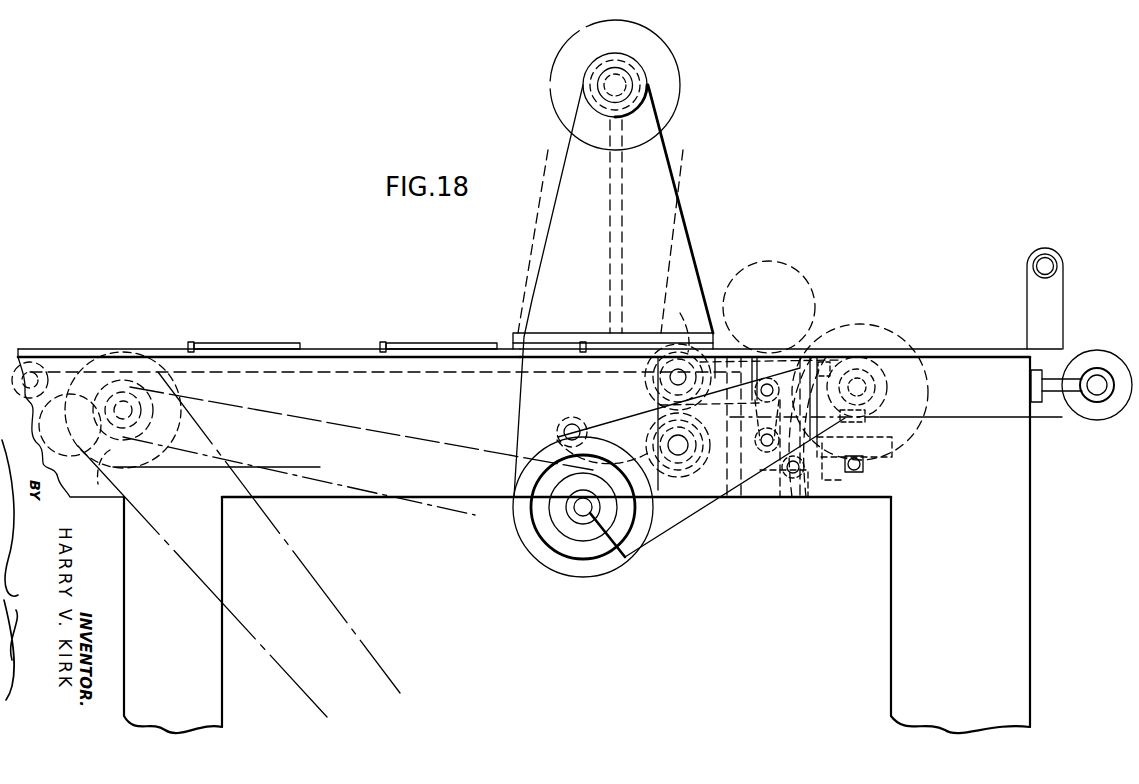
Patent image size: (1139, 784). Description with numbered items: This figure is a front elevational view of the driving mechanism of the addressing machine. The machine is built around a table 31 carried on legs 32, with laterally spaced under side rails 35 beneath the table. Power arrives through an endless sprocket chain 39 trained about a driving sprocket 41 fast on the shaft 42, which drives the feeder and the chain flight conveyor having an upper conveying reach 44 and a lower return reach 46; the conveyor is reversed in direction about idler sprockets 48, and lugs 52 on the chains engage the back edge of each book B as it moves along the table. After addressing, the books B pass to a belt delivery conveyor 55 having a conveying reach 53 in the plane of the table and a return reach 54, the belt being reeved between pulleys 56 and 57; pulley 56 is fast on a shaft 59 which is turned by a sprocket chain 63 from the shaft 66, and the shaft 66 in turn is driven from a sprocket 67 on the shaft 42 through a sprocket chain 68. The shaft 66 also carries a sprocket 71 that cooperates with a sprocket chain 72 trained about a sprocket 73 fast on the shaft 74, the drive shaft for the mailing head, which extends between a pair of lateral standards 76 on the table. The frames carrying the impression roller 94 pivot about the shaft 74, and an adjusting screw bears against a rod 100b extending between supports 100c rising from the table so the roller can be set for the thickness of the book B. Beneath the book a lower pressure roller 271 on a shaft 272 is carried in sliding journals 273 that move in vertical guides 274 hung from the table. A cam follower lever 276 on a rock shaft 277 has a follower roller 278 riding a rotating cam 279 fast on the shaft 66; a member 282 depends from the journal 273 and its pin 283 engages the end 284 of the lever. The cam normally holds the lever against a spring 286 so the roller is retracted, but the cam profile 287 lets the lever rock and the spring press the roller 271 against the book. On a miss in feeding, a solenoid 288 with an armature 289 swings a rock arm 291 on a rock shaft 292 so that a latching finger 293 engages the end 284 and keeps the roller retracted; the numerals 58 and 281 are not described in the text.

The table 31 is at (78, 355).
The legs 32 is at (212, 684).
The under side rails 35 is at (313, 490).
The endless sprocket chain 39 is at (318, 572).
The driving sprocket 41 is at (133, 462).
The shaft 42 is at (186, 391).
The upper conveying reach 44 is at (221, 357).
The lower return reach 46 is at (272, 466).
The idler sprockets 48 is at (682, 323).
The lugs 52 is at (191, 343).
The conveying reach 53 is at (948, 348).
The return reach 54 is at (998, 418).
The belt delivery conveyor 55 is at (999, 338).
The pulley 56 is at (870, 347).
The pulley 57 is at (1113, 362).
The post 58 is at (920, 355).
The shaft 59 is at (885, 350).
The sprocket chain 63 is at (698, 540).
The shaft 66 is at (626, 565).
The sprocket 67 is at (186, 437).
The sprocket chain 68 is at (470, 518).
The sprocket 71 is at (548, 590).
The sprocket chain 72 is at (679, 166).
The sprocket 73 is at (548, 80).
The shaft 74 is at (647, 86).
The lateral standards 76 is at (695, 254).
The impression roller 94 is at (795, 263).
The rod 100b is at (1047, 258).
The supports 100c is at (1032, 268).
The lower pressure roller 271 is at (805, 352).
The shaft 272 is at (803, 348).
The sliding journals 273 is at (648, 404).
The vertical guides 274 is at (758, 345).
The cam follower lever 276 is at (607, 420).
The rock shaft 277 is at (672, 466).
The follower roller 278 is at (540, 424).
The rotating cam 279 is at (528, 546).
The rod 281 is at (779, 500).
The member 282 is at (890, 378).
The pin 283 is at (762, 500).
The end of cam lever 284 is at (885, 408).
The spring 286 is at (805, 500).
The profile 287 is at (650, 540).
The solenoid 288 is at (912, 415).
The armature 289 is at (866, 463).
The rock arm 291 is at (832, 472).
The rock shaft 292 is at (803, 485).
The latching finger 293 is at (900, 440).
The book B is at (247, 344).